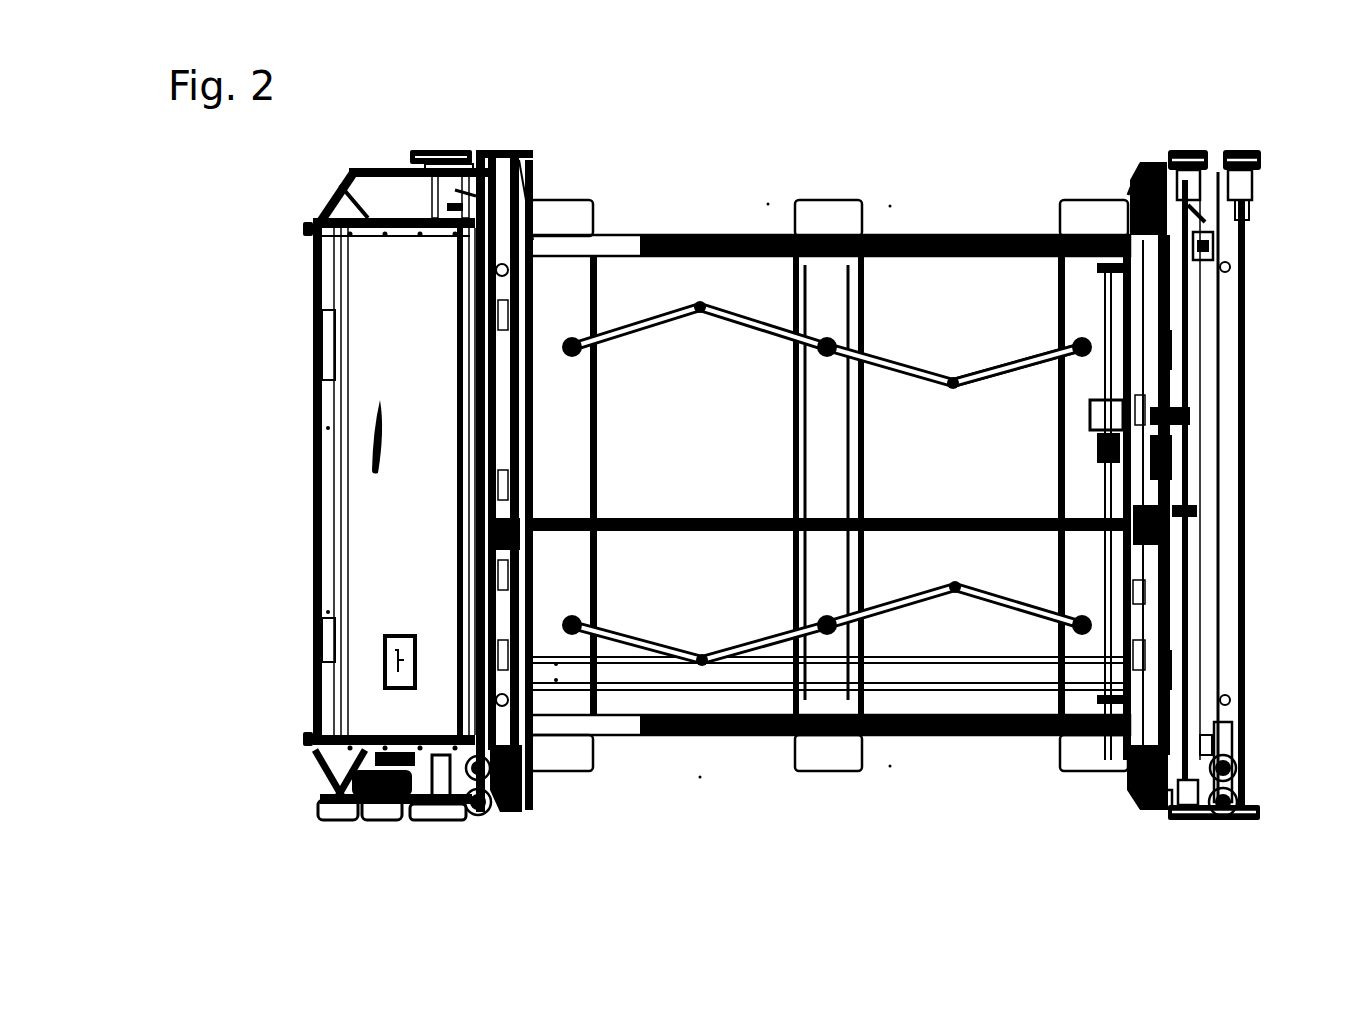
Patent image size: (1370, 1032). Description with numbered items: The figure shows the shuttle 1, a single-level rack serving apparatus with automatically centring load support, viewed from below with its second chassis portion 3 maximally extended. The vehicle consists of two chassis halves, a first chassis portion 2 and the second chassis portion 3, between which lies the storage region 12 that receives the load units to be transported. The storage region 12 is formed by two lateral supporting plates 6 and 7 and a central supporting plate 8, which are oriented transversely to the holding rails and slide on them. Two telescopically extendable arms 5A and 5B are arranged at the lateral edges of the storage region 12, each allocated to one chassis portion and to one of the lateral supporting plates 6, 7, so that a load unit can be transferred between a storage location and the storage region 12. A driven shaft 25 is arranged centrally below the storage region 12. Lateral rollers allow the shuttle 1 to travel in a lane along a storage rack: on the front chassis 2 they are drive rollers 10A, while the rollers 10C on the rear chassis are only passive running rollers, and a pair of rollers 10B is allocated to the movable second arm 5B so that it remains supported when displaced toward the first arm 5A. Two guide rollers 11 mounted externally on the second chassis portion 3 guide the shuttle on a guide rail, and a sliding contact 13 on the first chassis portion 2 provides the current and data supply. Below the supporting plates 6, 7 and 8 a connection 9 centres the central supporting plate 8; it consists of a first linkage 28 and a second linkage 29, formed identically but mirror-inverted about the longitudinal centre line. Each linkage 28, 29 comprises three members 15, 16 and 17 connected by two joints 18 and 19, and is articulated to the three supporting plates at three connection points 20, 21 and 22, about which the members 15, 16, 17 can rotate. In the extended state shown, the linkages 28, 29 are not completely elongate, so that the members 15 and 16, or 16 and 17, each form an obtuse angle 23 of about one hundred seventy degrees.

The shuttle 1 is at (246, 499).
The first chassis portion 2 is at (303, 311).
The second chassis portion 3 is at (1250, 483).
The first arm 5A is at (398, 481).
The second arm 5B is at (1206, 371).
The lateral supporting plate 6 is at (1085, 212).
The lateral supporting plate 7 is at (550, 214).
The central supporting plate 8 is at (826, 212).
The connection 9 is at (733, 624).
The drive rollers 10A is at (433, 148).
The pair of rollers 10B is at (1215, 139).
The passive running rollers 10C is at (1242, 175).
The guide rollers 11 is at (1247, 765).
The storage region 12 is at (696, 772).
The sliding contact 13 is at (360, 824).
The linkage member 15 is at (627, 335).
The linkage member 16 is at (887, 357).
The linkage member 17 is at (1047, 357).
The joint 18 is at (700, 314).
The joint 19 is at (953, 377).
The connection point 20 is at (579, 340).
The connection point 21 is at (834, 338).
The connection point 22 is at (1070, 328).
The obtuse angle 23 is at (732, 657).
The driven shaft 25 is at (630, 518).
The first linkage 28 is at (996, 390).
The second linkage 29 is at (999, 592).